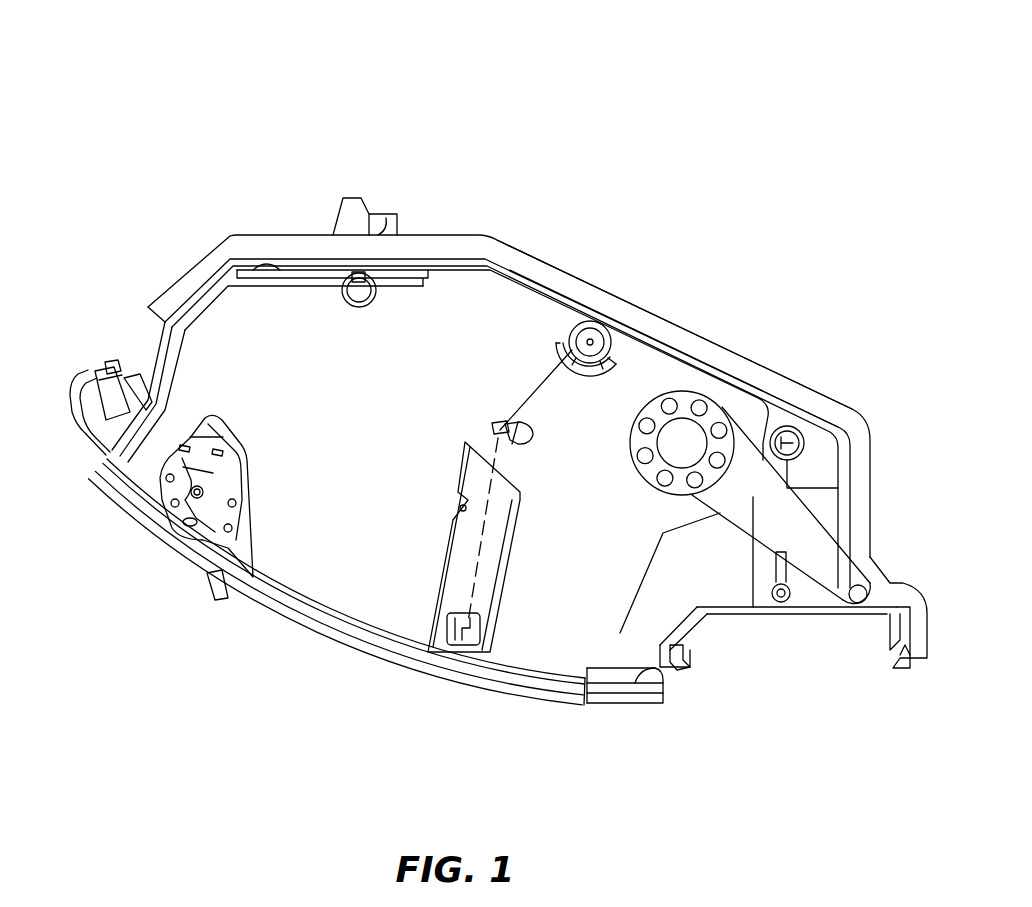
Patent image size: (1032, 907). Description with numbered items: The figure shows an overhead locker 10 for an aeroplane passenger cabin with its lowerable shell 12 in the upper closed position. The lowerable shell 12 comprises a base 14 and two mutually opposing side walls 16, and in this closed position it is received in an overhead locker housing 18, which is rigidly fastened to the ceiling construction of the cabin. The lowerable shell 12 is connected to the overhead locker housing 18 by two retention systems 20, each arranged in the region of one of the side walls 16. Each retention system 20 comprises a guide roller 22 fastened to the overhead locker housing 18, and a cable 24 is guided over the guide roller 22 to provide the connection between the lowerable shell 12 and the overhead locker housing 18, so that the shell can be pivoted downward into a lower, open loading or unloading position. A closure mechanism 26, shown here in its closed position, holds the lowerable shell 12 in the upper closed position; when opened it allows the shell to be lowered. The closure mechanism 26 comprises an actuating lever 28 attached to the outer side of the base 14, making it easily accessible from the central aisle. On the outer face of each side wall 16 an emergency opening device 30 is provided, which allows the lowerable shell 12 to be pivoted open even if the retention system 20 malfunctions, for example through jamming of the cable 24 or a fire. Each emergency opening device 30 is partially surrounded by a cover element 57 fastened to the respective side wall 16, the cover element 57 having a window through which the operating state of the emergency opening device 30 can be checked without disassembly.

The overhead locker 10 is at (745, 152).
The lowerable shell 12 is at (218, 383).
The base 14 is at (357, 653).
The side walls 16 is at (400, 375).
The overhead locker housing 18 is at (573, 282).
The retention system 20 is at (548, 383).
The guide roller 22 is at (598, 338).
The cable 24 is at (527, 393).
The closure mechanism 26 is at (182, 487).
The actuating lever 28 is at (214, 585).
The emergency opening device 30 is at (480, 641).
The cover element 57 is at (490, 558).